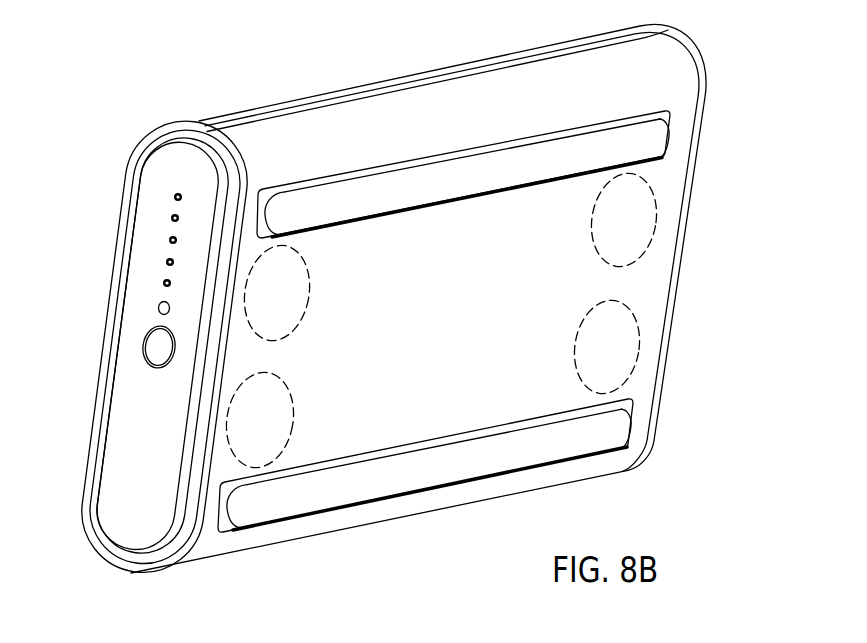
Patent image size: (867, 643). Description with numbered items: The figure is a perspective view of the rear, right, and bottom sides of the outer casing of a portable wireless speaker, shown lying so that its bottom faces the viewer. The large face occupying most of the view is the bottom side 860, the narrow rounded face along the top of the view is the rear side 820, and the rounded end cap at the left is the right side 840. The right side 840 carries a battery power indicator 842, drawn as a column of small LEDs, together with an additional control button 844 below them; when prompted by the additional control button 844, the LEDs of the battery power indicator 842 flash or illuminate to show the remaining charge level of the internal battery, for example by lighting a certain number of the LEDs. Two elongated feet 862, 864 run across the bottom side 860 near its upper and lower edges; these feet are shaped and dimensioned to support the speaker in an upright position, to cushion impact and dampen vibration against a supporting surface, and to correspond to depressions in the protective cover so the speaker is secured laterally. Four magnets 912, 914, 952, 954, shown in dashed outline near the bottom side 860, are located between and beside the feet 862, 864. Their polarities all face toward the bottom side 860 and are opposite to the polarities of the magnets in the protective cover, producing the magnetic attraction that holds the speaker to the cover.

The rear side 820 is at (485, 68).
The right side 840 is at (134, 493).
The battery power indicator 842 is at (177, 195).
The additional control buttons 844 is at (145, 345).
The bottom side 860 is at (640, 275).
The foot 862 is at (655, 138).
The foot 864 is at (435, 470).
The magnet 912 is at (638, 333).
The magnet 914 is at (292, 407).
The magnet 952 is at (655, 207).
The magnet 954 is at (308, 279).